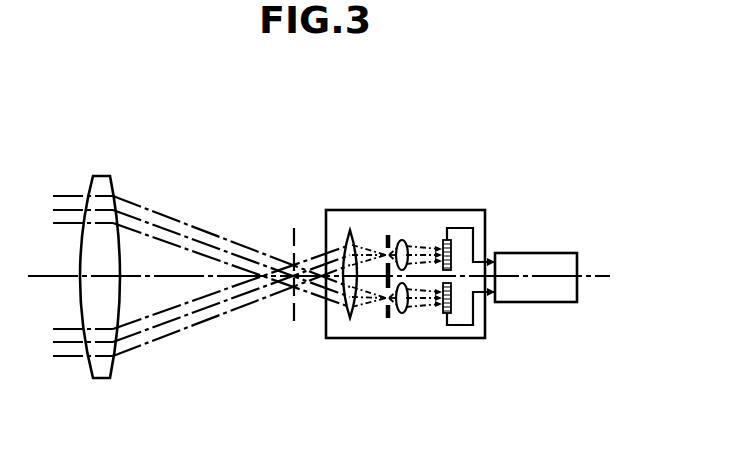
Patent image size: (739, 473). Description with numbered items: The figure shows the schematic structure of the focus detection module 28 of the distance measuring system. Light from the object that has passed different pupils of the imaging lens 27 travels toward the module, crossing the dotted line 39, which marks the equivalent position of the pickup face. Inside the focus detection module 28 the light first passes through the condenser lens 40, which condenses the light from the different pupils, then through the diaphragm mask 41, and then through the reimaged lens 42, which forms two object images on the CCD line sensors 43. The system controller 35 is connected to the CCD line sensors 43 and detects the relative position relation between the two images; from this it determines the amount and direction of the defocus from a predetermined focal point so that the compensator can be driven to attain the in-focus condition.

The imaging lens 27 is at (100, 176).
The focus detection module 28 is at (438, 338).
The system controller 35 is at (540, 266).
The dotted line 39 is at (296, 227).
The condenser lens 40 is at (352, 229).
The diaphragm mask 41 is at (388, 320).
The reimaged lens 42 is at (405, 240).
The CCD line sensors 43 is at (452, 246).